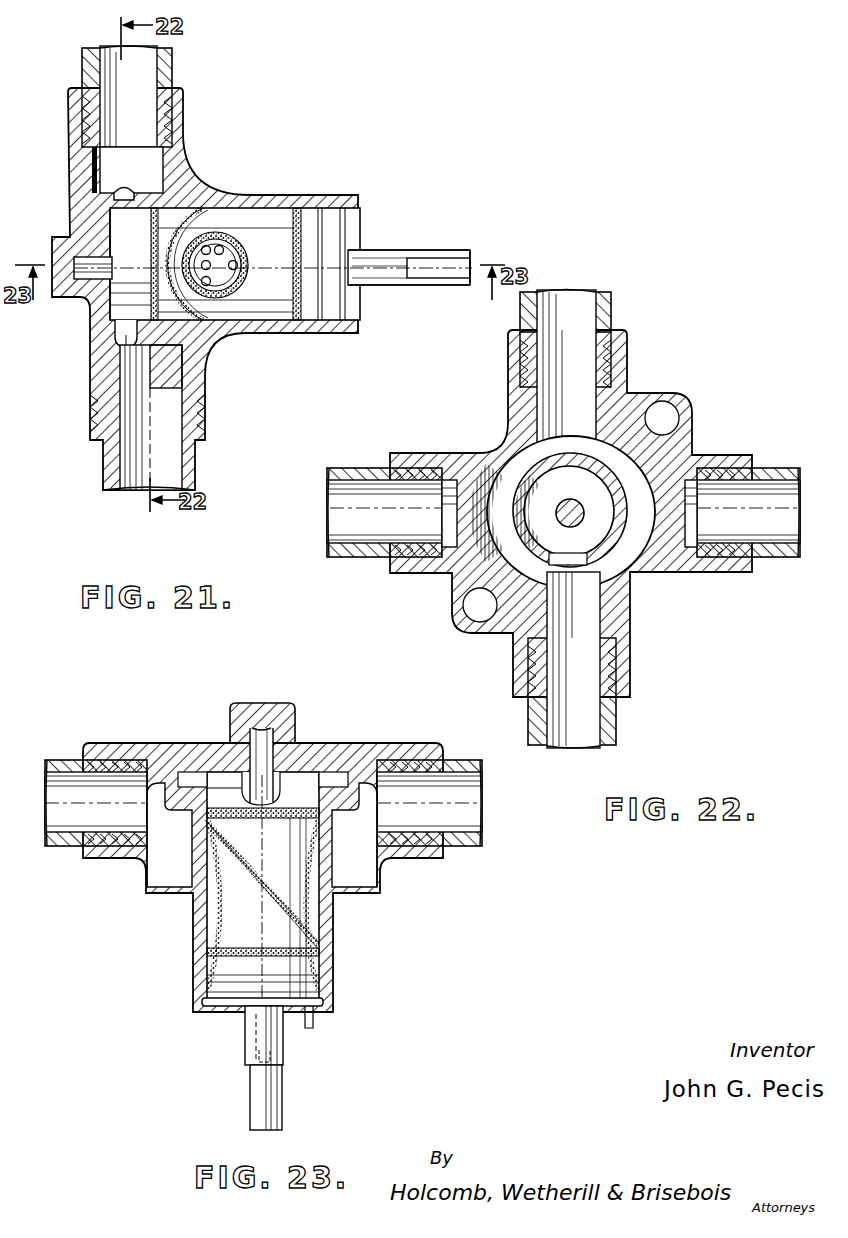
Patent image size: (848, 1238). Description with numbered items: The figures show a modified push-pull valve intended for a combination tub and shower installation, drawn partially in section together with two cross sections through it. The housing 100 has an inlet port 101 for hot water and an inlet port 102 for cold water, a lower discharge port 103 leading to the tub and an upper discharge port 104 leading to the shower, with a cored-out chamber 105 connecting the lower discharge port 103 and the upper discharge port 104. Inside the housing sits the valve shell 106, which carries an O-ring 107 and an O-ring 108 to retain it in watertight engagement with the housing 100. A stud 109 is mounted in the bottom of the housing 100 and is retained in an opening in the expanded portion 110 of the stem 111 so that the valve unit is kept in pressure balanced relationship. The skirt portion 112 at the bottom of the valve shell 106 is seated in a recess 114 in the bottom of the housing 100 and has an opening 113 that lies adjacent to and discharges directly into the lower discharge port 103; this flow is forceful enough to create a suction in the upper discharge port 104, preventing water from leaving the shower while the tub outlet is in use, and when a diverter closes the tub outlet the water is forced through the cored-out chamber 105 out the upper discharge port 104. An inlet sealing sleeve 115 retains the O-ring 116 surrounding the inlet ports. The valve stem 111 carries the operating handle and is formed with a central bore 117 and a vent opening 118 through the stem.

In FIG. 23, the housing 100 is at (365, 744).
In FIG. 22, the inlet port 101 is at (335, 495).
In FIG. 23, the inlet port 101 is at (45, 782).
In FIG. 22, the inlet port 102 is at (798, 492).
In FIG. 23, the inlet port 102 is at (482, 800).
In FIG. 21, the lower discharge port 103 is at (125, 487).
In FIG. 22, the lower discharge port 103 is at (592, 672).
In FIG. 21, the upper discharge port 104 is at (150, 50).
In FIG. 22, the upper discharge port 104 is at (590, 300).
In FIG. 21, the cored-out chamber 105 is at (115, 190).
In FIG. 21, the valve shell 106 is at (248, 264).
In FIG. 23, the valve shell 106 is at (262, 889).
In FIG. 21, the O-ring 107 is at (300, 325).
In FIG. 21, the O-ring 108 is at (195, 190).
In FIG. 23, the stud 109 is at (280, 741).
In FIG. 23, the stem guide bore 110 is at (252, 772).
In FIG. 23, the valve stem 111 is at (283, 1045).
In FIG. 23, the skirt portion 112 is at (305, 770).
In FIG. 21, the opening 113 is at (112, 322).
In FIG. 22, the opening 113 is at (580, 560).
In FIG. 23, the recess 114 is at (237, 790).
In FIG. 21, the inlet sealing sleeve 115 is at (226, 298).
In FIG. 21, the O-ring 116 is at (235, 288).
In FIG. 23, the central bore 117 is at (252, 1034).
In FIG. 23, the vent opening 118 is at (262, 1054).